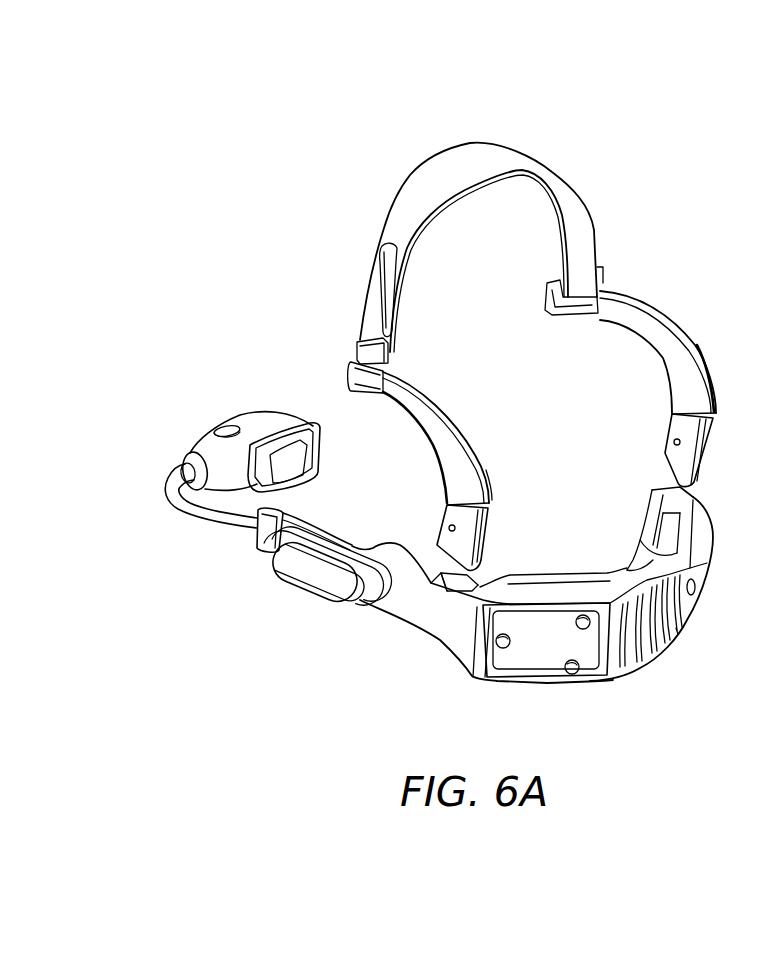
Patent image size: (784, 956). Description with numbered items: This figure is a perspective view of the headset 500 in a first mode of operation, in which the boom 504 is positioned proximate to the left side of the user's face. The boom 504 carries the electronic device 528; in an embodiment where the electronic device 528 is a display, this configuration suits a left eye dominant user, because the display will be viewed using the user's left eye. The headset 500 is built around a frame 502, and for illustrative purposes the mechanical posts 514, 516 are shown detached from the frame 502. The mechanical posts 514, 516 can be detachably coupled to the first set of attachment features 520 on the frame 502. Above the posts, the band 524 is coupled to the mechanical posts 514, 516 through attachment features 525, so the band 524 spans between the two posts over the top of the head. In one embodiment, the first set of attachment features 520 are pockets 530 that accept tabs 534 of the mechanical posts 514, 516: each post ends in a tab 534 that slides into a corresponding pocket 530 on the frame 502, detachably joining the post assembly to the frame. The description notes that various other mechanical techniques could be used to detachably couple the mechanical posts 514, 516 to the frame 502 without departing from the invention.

The headset 500 is at (323, 122).
The frame 502 is at (705, 566).
The boom 504 is at (197, 517).
The mechanical post 514 is at (463, 407).
The mechanical post 516 is at (668, 307).
The first set of attachment features 520 is at (438, 562).
The band 524 is at (427, 158).
The attachment features 525 is at (337, 367).
The electronic device 528 is at (238, 414).
The pocket 530 is at (498, 567).
The tab 534 is at (488, 521).